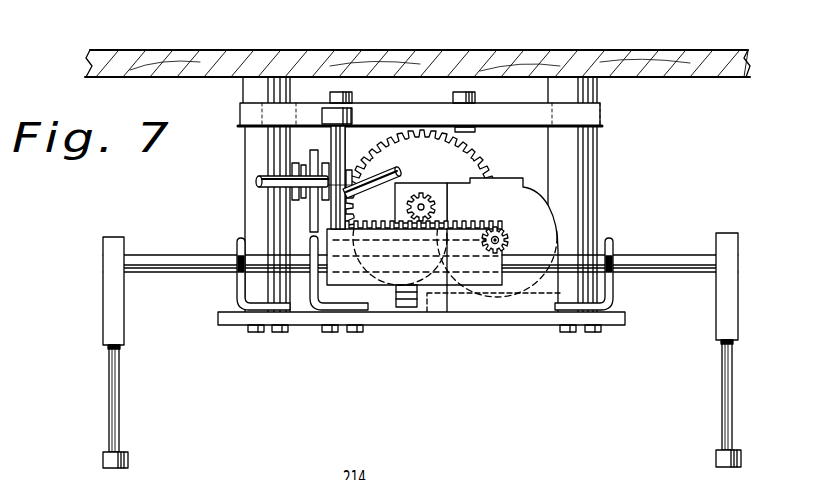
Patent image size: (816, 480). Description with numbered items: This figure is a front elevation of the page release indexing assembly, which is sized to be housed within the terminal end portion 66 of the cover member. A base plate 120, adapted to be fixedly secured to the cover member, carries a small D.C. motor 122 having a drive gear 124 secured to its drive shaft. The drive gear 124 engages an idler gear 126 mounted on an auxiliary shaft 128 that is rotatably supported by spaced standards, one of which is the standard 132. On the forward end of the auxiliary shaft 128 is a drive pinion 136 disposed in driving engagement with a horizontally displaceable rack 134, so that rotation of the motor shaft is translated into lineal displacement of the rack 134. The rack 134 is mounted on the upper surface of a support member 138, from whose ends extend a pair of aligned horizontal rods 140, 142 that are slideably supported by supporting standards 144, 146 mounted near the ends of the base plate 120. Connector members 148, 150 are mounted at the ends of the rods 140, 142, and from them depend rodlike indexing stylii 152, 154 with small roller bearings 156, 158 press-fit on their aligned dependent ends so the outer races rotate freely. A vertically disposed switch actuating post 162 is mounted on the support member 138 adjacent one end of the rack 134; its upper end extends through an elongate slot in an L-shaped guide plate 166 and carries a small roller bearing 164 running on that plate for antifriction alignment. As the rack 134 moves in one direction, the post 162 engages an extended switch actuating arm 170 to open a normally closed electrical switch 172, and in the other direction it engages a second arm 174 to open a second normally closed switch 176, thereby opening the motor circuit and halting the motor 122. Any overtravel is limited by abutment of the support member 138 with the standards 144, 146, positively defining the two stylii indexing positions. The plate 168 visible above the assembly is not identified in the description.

The terminal end portion 66 is at (248, 58).
The base plate 120 is at (486, 319).
The D.C. motor 122 is at (543, 205).
The drive gear 124 is at (510, 238).
The idler gear 126 is at (484, 158).
The auxiliary shaft 128 is at (405, 207).
The standard 132 is at (402, 290).
The rack 134 is at (466, 232).
The drive pinion 136 is at (422, 183).
The support member 138 is at (417, 293).
The rod 140 is at (173, 257).
The rod 142 is at (682, 257).
The supporting standard 144 is at (237, 288).
The supporting standard 146 is at (610, 284).
The connector member 148 is at (103, 287).
The connector member 150 is at (733, 263).
The indexing stylus 152 is at (110, 388).
The indexing stylus 154 is at (730, 372).
The roller bearing 156 is at (102, 458).
The roller bearing 158 is at (722, 456).
The switch actuating post 162 is at (338, 142).
The roller bearing 164 is at (330, 112).
The guide plate 166 is at (451, 112).
The mounting plate 168 is at (545, 124).
The switch actuating arm 170 is at (384, 173).
The electrical switch 172 is at (312, 196).
The switch actuating arm 174 is at (257, 181).
The electrical switch 176 is at (304, 183).